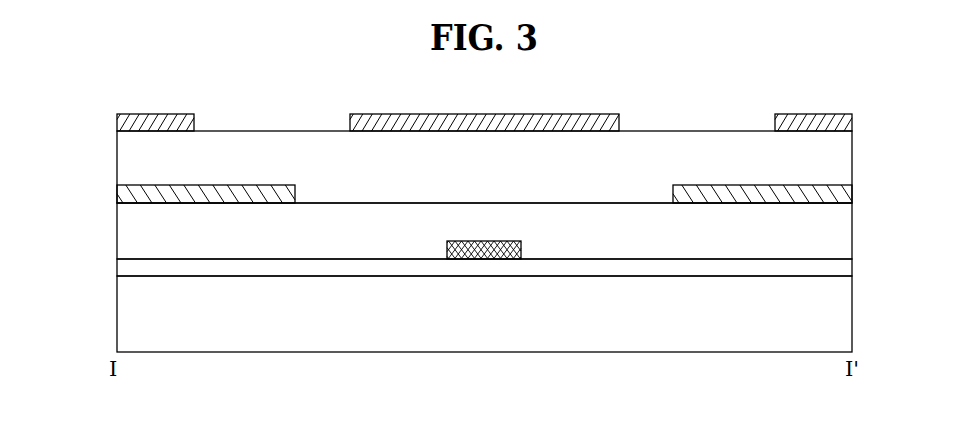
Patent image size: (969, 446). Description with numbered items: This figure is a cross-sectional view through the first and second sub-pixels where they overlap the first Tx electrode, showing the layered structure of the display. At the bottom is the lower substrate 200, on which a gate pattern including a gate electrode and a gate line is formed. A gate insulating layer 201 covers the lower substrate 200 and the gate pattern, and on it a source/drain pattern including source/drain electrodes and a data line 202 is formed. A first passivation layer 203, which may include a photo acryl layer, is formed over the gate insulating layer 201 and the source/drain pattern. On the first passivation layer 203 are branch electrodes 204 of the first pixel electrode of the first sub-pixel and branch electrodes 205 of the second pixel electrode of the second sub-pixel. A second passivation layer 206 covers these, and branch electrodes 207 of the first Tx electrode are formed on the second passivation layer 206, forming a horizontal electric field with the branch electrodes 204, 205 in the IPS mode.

The lower substrate 200 is at (841, 311).
The gate insulating layer 201 is at (841, 266).
The data line 202 is at (487, 259).
The first passivation layer 203 is at (841, 232).
The branch electrodes of first pixel electrode 204 is at (128, 193).
The branch electrodes of second pixel electrode 205 is at (841, 192).
The second passivation layer 206 is at (841, 157).
The branch electrodes of first Tx electrode 207 is at (841, 121).